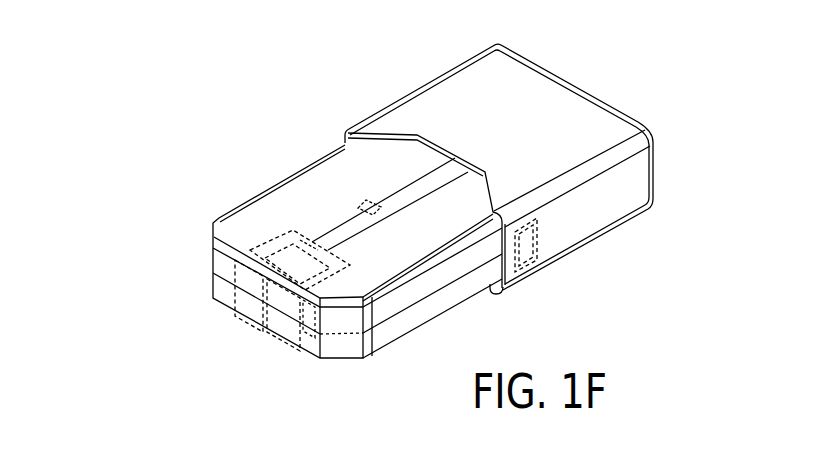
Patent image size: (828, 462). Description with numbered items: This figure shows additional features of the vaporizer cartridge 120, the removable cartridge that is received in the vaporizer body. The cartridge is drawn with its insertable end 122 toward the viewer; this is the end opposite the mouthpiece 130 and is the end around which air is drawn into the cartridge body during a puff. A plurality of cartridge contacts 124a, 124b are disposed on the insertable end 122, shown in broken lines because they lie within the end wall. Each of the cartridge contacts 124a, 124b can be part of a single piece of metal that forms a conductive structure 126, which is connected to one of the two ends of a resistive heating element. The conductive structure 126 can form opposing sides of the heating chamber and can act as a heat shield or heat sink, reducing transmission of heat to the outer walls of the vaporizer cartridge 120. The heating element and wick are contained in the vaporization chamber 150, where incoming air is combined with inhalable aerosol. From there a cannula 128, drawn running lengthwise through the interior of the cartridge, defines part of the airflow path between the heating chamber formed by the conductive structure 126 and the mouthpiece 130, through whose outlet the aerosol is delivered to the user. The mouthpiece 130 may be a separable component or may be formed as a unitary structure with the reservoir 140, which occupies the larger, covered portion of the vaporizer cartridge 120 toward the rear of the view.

The vaporizer cartridge 120 is at (298, 79).
The insertable end 122 is at (203, 257).
The cartridge contact 124a is at (227, 297).
The cartridge contact 124b is at (283, 330).
The conductive structure 126 is at (259, 229).
The cannula 128 is at (352, 222).
The mouthpiece 130 is at (562, 161).
The reservoir 140 is at (455, 281).
The vaporization chamber 150 is at (408, 240).